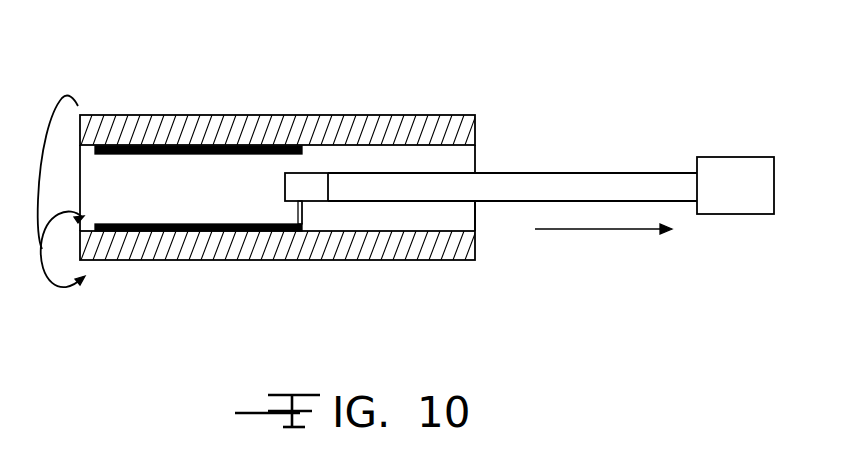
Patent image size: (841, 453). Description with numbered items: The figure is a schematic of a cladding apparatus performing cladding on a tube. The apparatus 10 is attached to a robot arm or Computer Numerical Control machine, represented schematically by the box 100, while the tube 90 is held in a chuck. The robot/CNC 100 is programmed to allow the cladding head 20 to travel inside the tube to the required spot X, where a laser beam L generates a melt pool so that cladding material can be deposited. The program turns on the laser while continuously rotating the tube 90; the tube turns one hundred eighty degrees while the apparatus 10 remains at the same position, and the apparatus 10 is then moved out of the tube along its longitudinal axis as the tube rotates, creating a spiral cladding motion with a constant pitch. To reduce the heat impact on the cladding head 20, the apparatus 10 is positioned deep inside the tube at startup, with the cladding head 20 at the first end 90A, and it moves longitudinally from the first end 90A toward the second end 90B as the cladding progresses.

The tube 90 is at (85, 98).
The first end 90A is at (46, 245).
The second end 90B is at (478, 220).
The cladding head 20 is at (314, 176).
The apparatus 10 is at (568, 172).
The robot/CNC machine 100 is at (737, 157).
The required spot X is at (298, 224).
The laser beam L is at (303, 217).